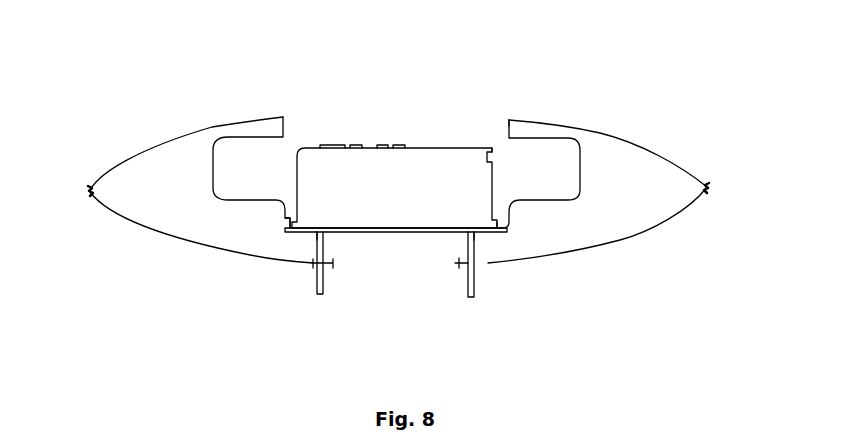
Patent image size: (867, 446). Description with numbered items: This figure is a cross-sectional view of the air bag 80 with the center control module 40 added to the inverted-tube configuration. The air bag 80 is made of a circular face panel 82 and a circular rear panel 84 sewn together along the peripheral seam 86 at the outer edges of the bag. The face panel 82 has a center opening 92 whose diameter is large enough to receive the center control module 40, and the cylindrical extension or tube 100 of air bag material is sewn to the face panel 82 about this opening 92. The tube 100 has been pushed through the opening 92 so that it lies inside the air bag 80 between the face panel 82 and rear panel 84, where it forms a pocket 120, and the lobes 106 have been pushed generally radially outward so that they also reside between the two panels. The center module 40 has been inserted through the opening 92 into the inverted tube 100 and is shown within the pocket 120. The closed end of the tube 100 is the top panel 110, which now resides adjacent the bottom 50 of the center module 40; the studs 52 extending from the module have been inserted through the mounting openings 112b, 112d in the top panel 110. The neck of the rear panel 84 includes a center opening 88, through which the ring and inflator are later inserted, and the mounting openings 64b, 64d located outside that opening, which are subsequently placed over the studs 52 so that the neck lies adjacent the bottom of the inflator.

The center control module 40 is at (440, 144).
The bottom of the center module 50 is at (297, 235).
The stud 52 is at (317, 282).
The mounting opening 64b is at (483, 260).
The mounting opening 64d is at (312, 270).
The air bag 80 is at (137, 146).
The face panel 82 is at (675, 163).
The rear panel 84 is at (662, 228).
The peripheral seam 86 is at (93, 187).
The center opening 88 is at (340, 263).
The center opening 92 is at (505, 125).
The cylindrical extension or tube 100 is at (502, 130).
The lobe, sock or bag 106 is at (208, 173).
The top panel 110 is at (379, 232).
The mounting opening 112b is at (467, 232).
The mounting opening 112d is at (313, 233).
The pocket 120 is at (502, 205).